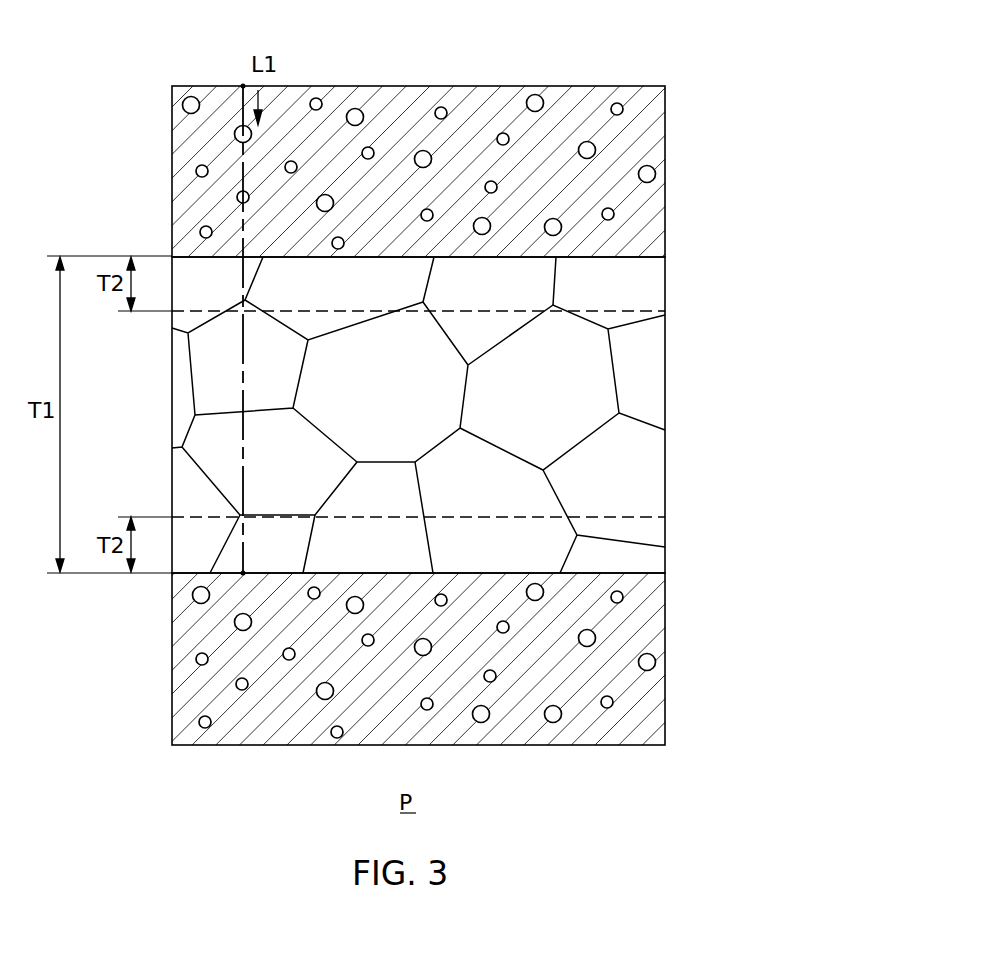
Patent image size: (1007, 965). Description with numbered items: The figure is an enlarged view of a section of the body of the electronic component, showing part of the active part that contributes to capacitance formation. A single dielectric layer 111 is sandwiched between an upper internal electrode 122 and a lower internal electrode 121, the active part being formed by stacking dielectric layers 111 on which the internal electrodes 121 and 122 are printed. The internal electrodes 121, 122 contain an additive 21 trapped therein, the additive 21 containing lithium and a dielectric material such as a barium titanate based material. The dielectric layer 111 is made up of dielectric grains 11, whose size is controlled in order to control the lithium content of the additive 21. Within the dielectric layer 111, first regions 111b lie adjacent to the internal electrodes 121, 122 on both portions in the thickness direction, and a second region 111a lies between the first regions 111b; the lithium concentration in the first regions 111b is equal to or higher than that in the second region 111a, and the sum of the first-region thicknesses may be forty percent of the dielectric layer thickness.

The dielectric grains 11 is at (359, 365).
The dielectric layer 111 is at (799, 283).
The second region 111a is at (662, 408).
The first regions 111b is at (662, 283).
The internal electrode 121 is at (192, 698).
The internal electrode 122 is at (587, 113).
The additive 21 is at (648, 173).